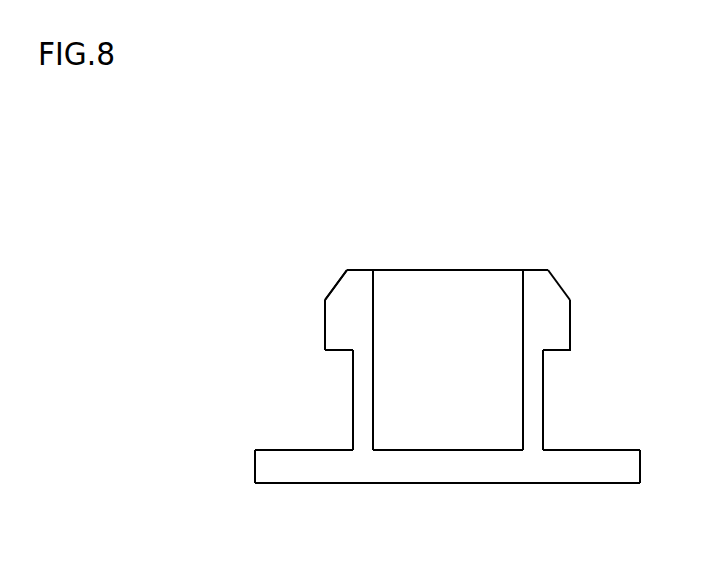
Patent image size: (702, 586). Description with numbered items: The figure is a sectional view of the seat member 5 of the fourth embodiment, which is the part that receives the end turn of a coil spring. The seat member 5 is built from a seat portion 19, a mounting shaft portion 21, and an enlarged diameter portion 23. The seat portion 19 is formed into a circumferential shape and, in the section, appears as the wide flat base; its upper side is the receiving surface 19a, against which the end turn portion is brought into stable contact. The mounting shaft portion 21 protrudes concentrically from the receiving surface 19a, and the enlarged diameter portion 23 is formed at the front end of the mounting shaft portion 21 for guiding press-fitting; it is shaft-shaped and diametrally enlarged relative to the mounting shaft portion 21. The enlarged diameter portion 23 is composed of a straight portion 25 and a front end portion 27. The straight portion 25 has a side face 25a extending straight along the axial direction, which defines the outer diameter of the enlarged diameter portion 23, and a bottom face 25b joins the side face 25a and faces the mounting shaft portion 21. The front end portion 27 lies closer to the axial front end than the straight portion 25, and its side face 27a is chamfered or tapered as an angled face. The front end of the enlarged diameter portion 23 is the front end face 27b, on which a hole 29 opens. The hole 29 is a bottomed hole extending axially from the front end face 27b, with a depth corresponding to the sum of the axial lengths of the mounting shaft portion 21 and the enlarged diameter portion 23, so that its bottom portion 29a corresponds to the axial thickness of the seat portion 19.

The seat member 5 is at (558, 246).
The seat portion 19 is at (612, 470).
The receiving surface 19a is at (262, 449).
The mounting shaft portion 21 is at (543, 398).
The enlarged diameter portion 23 is at (558, 282).
The straight portion 25 is at (553, 322).
The side face 25a is at (325, 324).
The bottom face 25b is at (330, 351).
The front end portion 27 is at (363, 283).
The side face 27a is at (336, 290).
The front end face 27b is at (528, 270).
The hole 29 is at (438, 290).
The bottom portion 29a is at (482, 467).